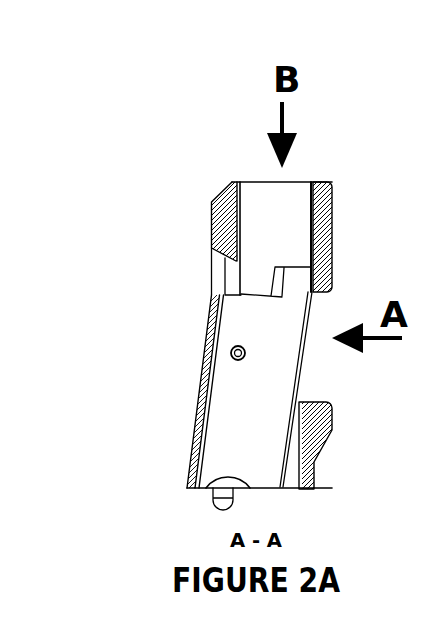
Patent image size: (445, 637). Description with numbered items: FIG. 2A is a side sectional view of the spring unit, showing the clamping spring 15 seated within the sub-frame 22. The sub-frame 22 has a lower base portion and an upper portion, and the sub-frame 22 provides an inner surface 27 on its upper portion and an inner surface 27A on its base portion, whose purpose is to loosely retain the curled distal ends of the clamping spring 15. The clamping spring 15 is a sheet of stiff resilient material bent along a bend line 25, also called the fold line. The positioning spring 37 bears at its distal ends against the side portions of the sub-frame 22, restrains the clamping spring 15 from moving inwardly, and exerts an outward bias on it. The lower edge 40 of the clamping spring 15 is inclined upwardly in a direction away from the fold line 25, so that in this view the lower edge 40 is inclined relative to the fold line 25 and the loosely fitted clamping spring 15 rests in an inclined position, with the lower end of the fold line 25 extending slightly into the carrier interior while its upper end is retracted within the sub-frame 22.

The sub-frame 22 is at (229, 200).
The inner surface of the upper portion 27 is at (311, 217).
The inner surface on the base portion 27A is at (293, 482).
The clamping spring 15 is at (220, 390).
The bend line 25 is at (188, 447).
The positioning spring 37 is at (225, 342).
The lower edge 40 is at (202, 490).